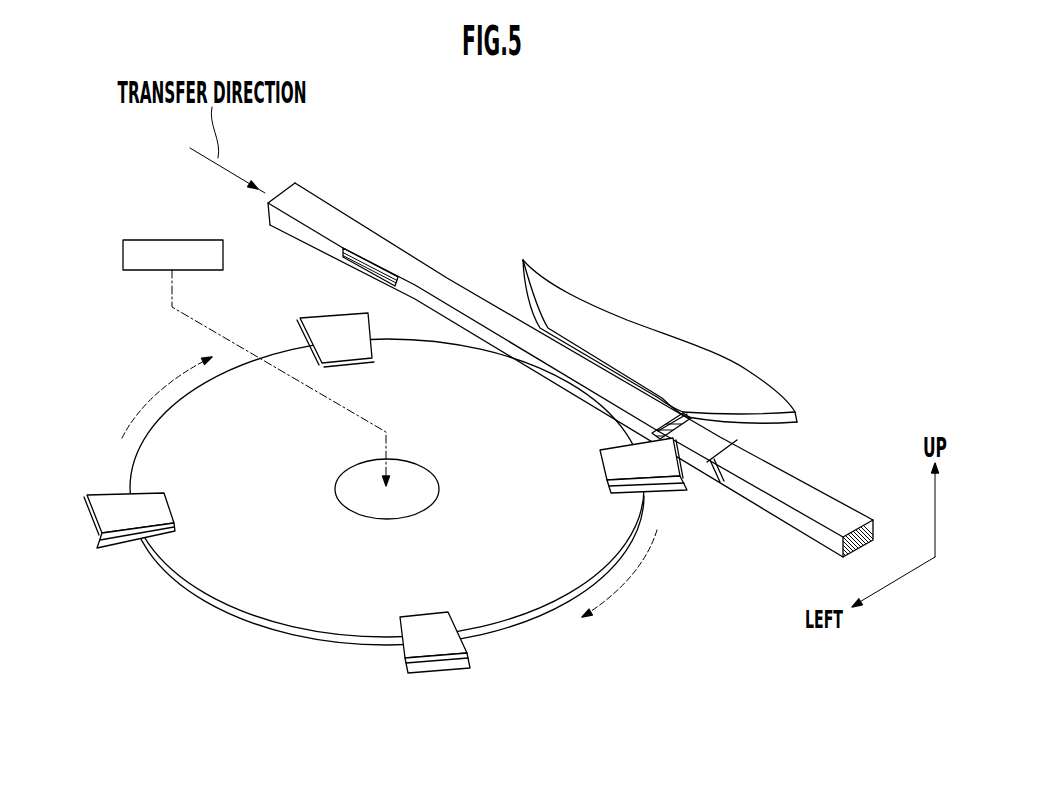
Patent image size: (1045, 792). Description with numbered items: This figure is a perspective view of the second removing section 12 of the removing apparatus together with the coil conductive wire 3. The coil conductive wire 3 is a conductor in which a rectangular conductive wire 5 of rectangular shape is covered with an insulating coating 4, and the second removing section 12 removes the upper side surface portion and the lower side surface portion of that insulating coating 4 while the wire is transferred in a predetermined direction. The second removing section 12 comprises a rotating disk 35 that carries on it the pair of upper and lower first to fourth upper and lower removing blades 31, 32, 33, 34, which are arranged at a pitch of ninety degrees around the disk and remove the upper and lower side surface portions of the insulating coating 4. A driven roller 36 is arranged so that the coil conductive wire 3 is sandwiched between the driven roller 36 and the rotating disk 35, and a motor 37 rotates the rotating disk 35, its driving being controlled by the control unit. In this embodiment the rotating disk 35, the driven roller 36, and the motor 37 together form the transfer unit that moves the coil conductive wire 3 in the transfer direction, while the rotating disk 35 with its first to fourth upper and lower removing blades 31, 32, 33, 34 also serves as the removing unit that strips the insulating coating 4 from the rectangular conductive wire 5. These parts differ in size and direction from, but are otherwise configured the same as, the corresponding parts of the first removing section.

The coil conductive wire 3 is at (334, 203).
The insulating coating 4 is at (397, 244).
The rectangular conductive wire 5 is at (357, 268).
The second removing section 12 is at (622, 630).
The first upper and lower removing blade 31 is at (694, 482).
The second upper and lower removing blade 32 is at (292, 312).
The third upper and lower removing blade 33 is at (78, 496).
The fourth upper and lower removing blade 34 is at (463, 680).
The rotating disk 35 is at (247, 593).
The driven roller 36 is at (636, 341).
The motor 37 is at (172, 240).